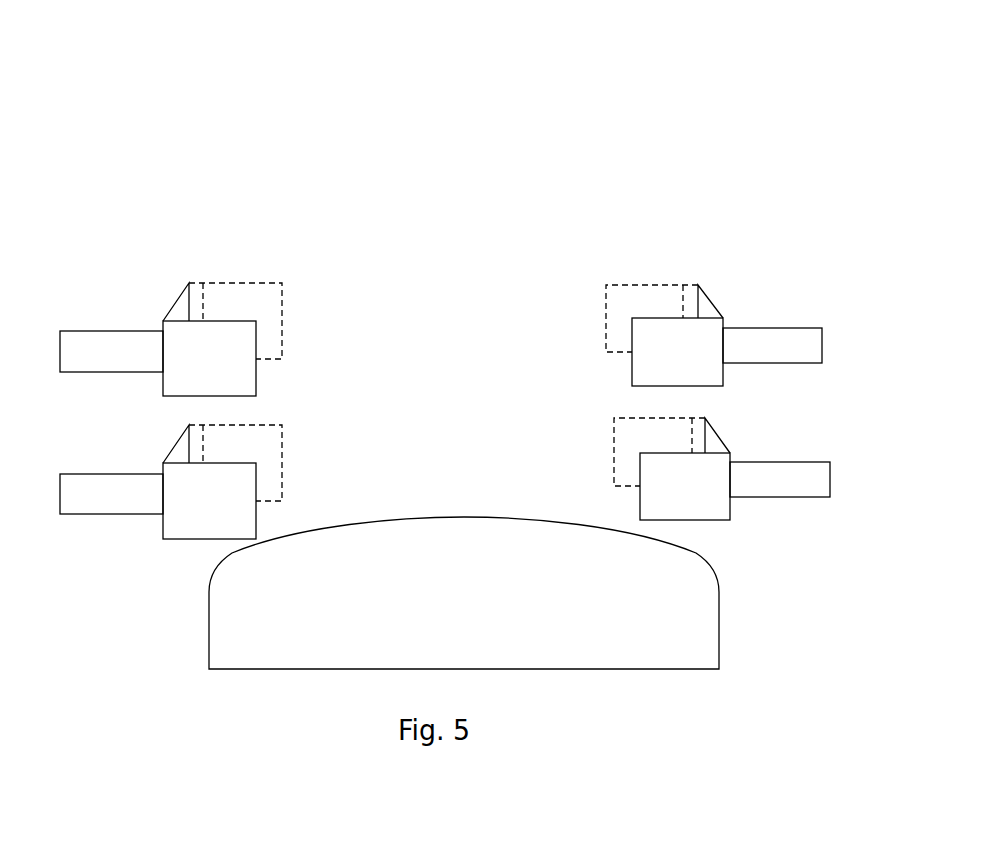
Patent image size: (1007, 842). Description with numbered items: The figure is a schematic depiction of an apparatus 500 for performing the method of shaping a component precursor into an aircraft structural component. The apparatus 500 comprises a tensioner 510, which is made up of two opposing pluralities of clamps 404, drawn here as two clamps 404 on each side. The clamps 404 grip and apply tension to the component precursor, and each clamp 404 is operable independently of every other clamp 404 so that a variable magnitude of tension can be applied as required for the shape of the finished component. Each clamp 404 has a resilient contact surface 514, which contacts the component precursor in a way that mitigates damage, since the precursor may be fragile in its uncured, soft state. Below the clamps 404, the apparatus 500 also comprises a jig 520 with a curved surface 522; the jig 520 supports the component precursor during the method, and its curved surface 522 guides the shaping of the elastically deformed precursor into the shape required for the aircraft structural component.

The apparatus 500 is at (445, 197).
The clamp 404 is at (185, 335).
The tensioner 510 is at (813, 337).
The resilient contact surface 514 is at (238, 297).
The jig 520 is at (242, 656).
The curved surface 522 is at (372, 522).